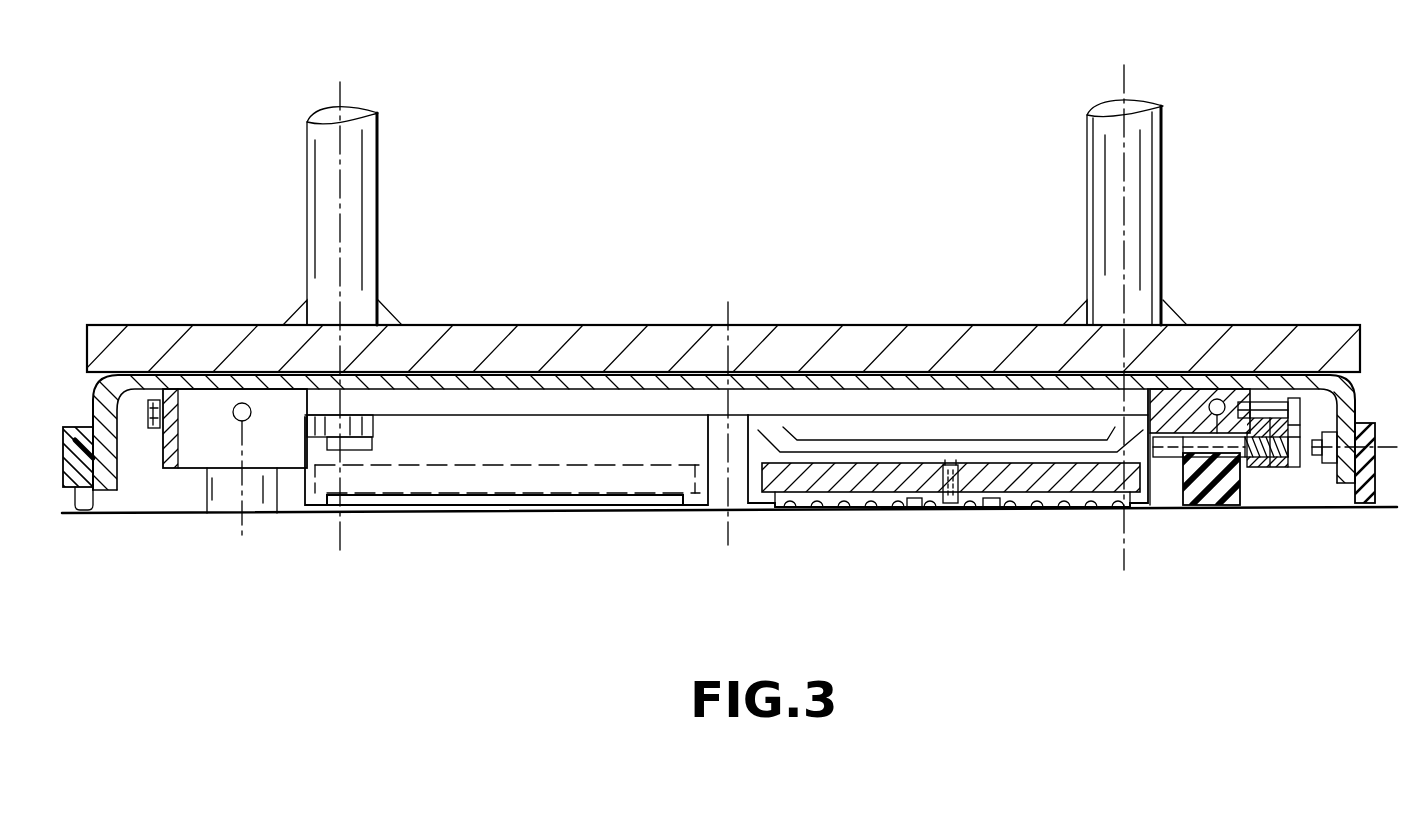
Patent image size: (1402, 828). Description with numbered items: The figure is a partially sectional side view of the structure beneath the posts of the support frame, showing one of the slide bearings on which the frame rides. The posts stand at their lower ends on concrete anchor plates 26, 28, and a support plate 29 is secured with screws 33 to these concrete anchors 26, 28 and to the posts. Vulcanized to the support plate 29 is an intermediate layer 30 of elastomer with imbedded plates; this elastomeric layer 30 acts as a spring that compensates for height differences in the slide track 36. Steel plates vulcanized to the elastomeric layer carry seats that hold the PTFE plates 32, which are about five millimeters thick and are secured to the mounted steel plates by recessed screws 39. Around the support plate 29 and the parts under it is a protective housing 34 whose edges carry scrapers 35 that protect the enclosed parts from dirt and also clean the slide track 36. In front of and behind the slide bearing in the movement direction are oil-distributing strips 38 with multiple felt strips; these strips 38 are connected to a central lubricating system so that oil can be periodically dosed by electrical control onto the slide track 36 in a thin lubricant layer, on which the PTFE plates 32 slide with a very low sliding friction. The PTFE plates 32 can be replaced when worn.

The concrete anchor plate 26 is at (350, 180).
The concrete anchor plate 28 is at (640, 350).
The support plate 29 is at (655, 397).
The intermediate elastomeric layer 30 is at (480, 432).
The PTFE insert plate 32 is at (1012, 507).
The screw 33 is at (372, 442).
The protective housing 34 is at (1083, 387).
The scraper 35 is at (83, 513).
The slide track 36 is at (1273, 502).
The oil-distributing strip 38 is at (260, 513).
The recessed screw 39 is at (953, 505).